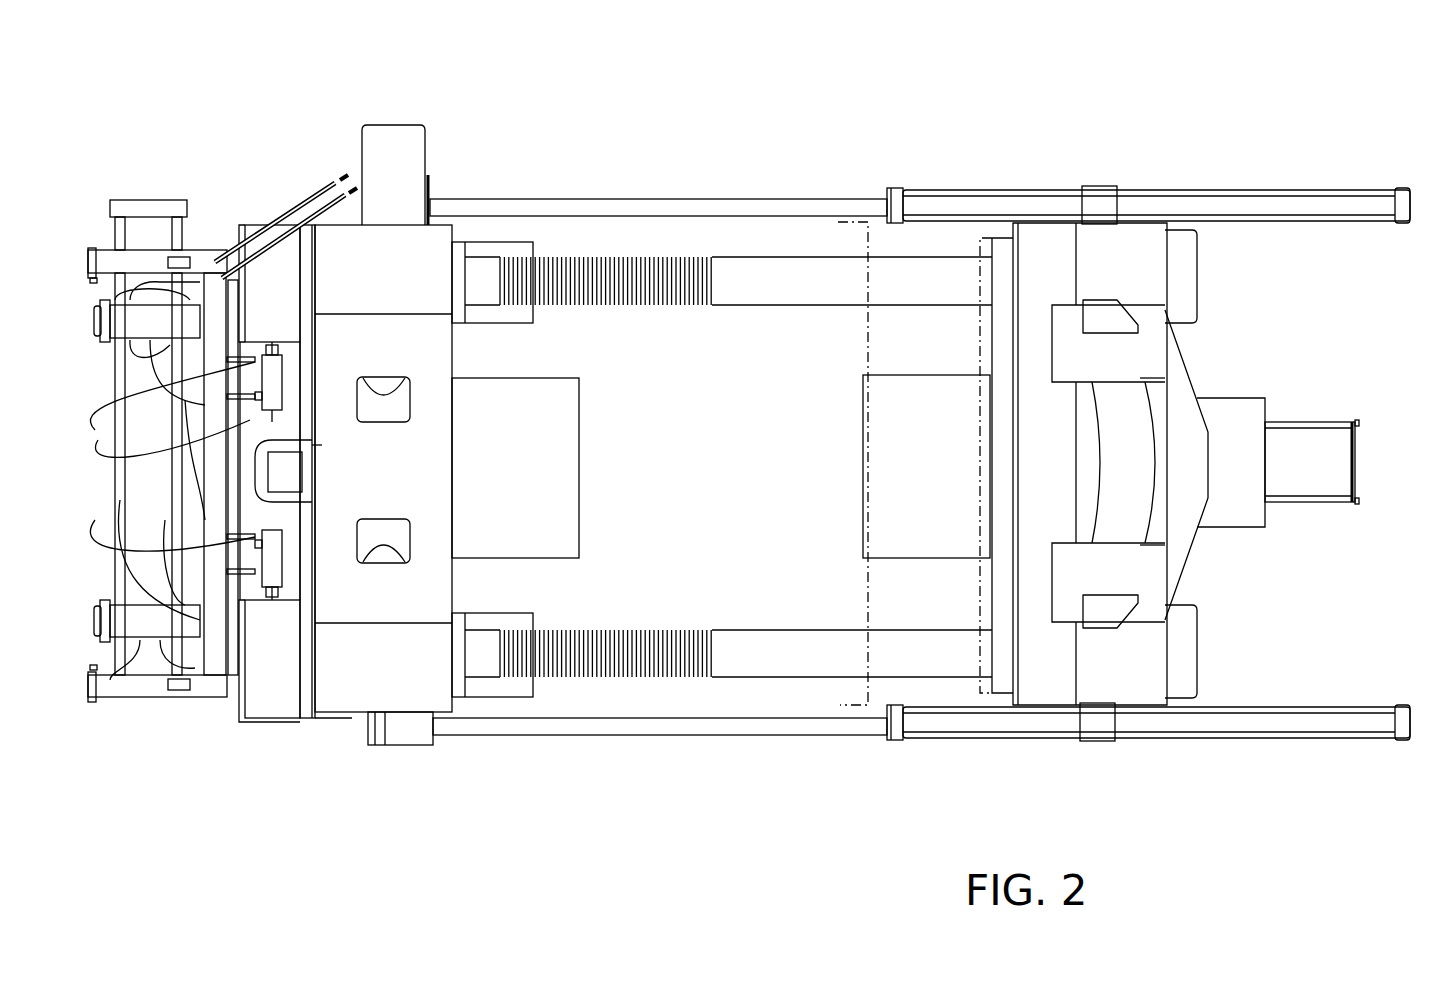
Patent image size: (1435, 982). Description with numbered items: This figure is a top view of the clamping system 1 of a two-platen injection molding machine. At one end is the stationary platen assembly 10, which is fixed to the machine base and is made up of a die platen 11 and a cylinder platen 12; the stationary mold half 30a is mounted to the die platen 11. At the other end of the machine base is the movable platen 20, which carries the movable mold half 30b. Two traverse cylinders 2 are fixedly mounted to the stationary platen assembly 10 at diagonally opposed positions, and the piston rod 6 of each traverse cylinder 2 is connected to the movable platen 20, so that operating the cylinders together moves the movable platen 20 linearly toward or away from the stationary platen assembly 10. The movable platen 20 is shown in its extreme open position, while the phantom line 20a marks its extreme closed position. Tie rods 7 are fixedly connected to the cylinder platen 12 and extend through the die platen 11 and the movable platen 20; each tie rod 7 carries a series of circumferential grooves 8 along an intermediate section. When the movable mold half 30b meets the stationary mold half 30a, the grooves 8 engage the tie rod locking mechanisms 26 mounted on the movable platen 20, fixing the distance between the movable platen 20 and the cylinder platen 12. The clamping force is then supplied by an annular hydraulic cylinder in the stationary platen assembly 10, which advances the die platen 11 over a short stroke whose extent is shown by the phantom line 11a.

The clamping system 1 is at (775, 80).
The traverse cylinders 2 is at (1200, 205).
The piston rod 6 is at (512, 205).
The tie rods 7 is at (760, 287).
The circumferential grooves 8 is at (601, 306).
The stationary platen assembly 10 is at (1304, 347).
The die platen 11 is at (1005, 288).
The phantom line 11a is at (988, 205).
The cylinder platen 12 is at (1135, 688).
The movable platen 20 is at (398, 283).
The phantom line 20a is at (867, 218).
The tie rod locking mechanisms 26 is at (266, 248).
The stationary mold half 30a is at (947, 473).
The movable mold half 30b is at (534, 478).